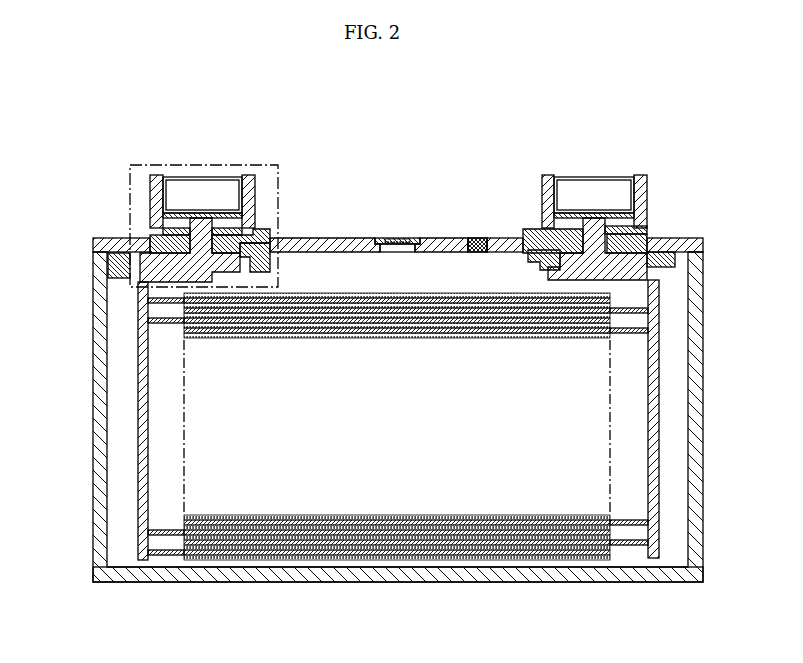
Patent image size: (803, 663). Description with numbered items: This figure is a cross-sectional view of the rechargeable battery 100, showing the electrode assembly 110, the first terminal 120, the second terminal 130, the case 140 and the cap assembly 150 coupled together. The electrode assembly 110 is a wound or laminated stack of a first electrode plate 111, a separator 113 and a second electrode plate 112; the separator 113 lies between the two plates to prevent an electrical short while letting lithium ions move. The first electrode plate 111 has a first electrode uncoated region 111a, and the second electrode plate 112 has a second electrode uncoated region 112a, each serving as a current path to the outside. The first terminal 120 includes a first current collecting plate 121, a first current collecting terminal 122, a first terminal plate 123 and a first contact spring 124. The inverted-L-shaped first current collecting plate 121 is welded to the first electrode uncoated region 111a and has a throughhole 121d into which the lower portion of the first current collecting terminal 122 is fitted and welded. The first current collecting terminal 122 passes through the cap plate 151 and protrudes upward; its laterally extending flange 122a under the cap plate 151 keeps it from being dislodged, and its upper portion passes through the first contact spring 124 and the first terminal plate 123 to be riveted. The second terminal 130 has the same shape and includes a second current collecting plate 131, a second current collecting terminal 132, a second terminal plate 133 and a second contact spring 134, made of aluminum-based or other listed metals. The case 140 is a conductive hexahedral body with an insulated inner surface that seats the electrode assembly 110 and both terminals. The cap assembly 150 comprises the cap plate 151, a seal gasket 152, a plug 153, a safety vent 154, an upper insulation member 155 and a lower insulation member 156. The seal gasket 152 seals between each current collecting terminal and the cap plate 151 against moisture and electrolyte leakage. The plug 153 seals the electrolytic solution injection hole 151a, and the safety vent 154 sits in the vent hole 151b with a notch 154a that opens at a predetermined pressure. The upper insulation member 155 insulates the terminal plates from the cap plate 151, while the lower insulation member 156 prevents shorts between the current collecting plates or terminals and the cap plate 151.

The rechargeable battery 100 is at (732, 103).
The electrode assembly 110 is at (478, 566).
The first electrode plate 111 is at (285, 560).
The first electrode uncoated region 111a is at (168, 556).
The second electrode plate 112 is at (542, 562).
The second electrode uncoated region 112a is at (628, 546).
The separator 113 is at (412, 542).
The first terminal 120 is at (207, 172).
The first current collecting plate 121 is at (138, 393).
The throughhole 121d is at (152, 267).
The first current collecting terminal 122 is at (187, 243).
The flange 122a is at (130, 263).
The first terminal plate 123 is at (149, 195).
The first contact spring 124 is at (178, 182).
The second terminal 130 is at (603, 160).
The second current collecting plate 131 is at (660, 392).
The second current collecting terminal 132 is at (615, 243).
The second terminal plate 133 is at (650, 195).
The second contact spring 134 is at (577, 182).
The case 140 is at (703, 333).
The cap assembly 150 is at (481, 165).
The cap plate 151 is at (95, 244).
The electrolytic solution injection hole 151a is at (478, 253).
The vent hole 151b is at (398, 254).
The seal gasket 152 is at (265, 238).
The plug 153 is at (478, 237).
The safety vent 154 is at (418, 237).
The notch 154a is at (393, 237).
The upper insulation member 155 is at (177, 232).
The lower insulation member 156 is at (266, 263).